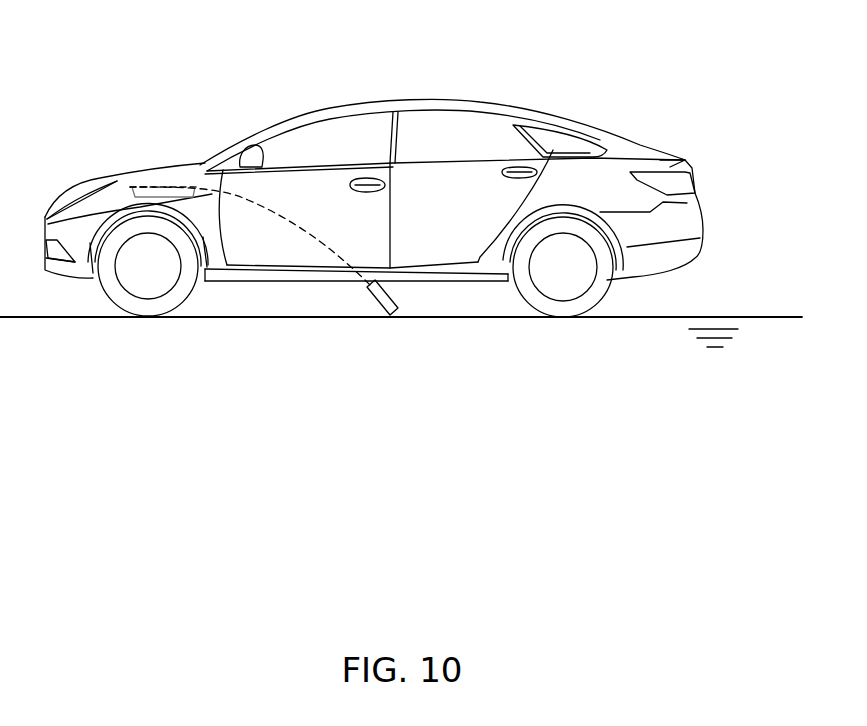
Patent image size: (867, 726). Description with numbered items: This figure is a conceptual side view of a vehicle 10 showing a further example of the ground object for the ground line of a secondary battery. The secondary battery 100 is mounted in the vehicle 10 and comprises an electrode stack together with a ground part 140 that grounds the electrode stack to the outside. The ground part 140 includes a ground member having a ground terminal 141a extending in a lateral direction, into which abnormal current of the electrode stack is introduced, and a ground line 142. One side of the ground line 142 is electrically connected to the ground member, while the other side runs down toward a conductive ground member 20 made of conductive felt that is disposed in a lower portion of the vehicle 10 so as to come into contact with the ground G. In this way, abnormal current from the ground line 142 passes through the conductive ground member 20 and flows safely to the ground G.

The vehicle 10 is at (572, 123).
The conductive ground member 20 is at (390, 316).
The secondary battery 100 is at (163, 181).
The ground part 140 is at (250, 147).
The ground terminal 141a is at (202, 193).
The ground line 142 is at (300, 222).
The ground G is at (785, 316).